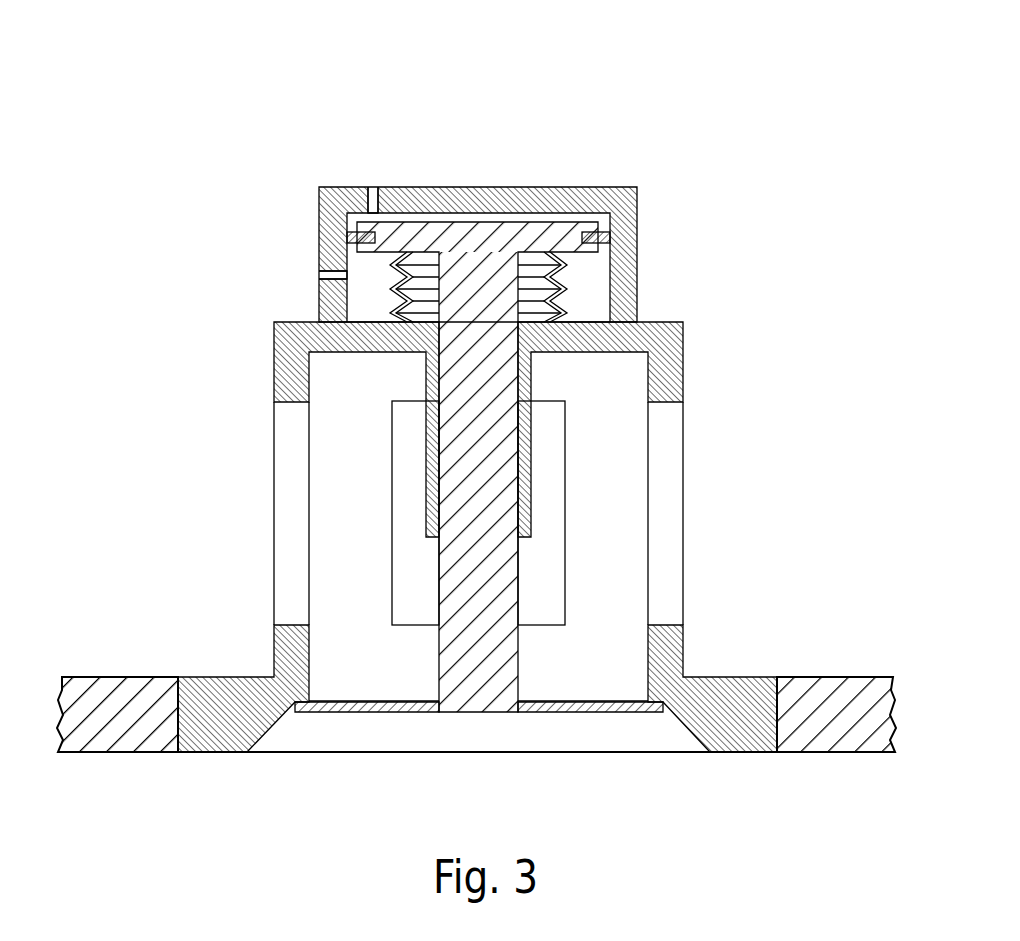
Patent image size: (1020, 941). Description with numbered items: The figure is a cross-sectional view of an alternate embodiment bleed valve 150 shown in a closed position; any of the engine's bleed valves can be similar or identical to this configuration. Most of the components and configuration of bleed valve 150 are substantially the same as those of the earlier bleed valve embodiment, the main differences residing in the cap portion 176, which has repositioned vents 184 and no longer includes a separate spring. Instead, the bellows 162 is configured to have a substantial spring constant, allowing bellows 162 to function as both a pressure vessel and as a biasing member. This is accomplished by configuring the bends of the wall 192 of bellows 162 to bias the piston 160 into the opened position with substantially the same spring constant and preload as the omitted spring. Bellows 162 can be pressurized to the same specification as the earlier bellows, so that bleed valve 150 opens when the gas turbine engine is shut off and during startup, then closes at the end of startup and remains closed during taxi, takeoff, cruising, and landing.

The bleed valve 150 is at (656, 67).
The piston 160 is at (518, 662).
The bellows 162 is at (385, 303).
The cap portion 176 is at (773, 180).
The vents 184 is at (373, 187).
The wall 192 is at (556, 267).